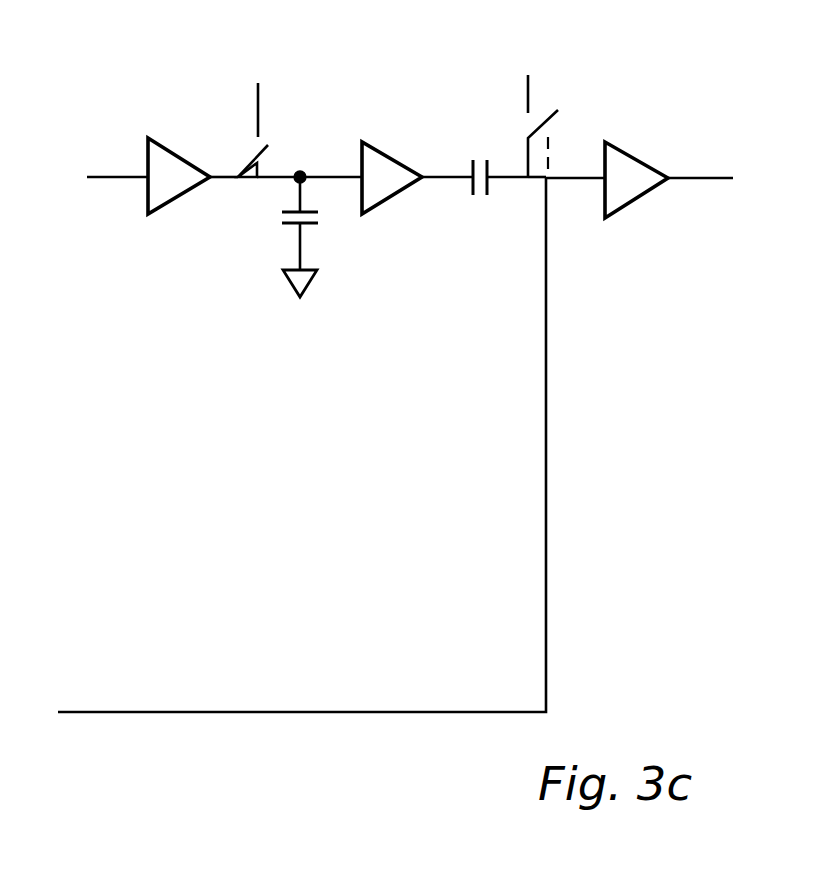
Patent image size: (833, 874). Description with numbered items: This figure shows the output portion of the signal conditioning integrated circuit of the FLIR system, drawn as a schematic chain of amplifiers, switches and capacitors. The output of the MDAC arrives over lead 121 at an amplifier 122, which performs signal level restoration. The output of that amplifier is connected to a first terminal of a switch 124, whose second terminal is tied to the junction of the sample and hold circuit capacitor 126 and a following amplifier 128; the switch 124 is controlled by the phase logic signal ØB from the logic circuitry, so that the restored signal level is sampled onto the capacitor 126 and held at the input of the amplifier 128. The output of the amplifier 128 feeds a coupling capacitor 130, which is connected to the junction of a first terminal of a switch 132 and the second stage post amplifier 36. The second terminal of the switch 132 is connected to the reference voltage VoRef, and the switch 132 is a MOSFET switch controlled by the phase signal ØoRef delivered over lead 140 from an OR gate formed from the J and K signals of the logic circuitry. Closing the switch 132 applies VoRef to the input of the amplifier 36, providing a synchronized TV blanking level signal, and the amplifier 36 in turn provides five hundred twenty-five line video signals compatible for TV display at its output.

The lead 121 is at (115, 177).
The amplifier 122 is at (158, 148).
The switch 124 is at (262, 140).
The sample and hold circuit capacitor 126 is at (276, 220).
The amplifier 128 is at (372, 149).
The coupling capacitor 130 is at (473, 197).
The switch 132 is at (538, 132).
The second stage post amplifier 36 is at (627, 160).
The lead 140 is at (145, 712).